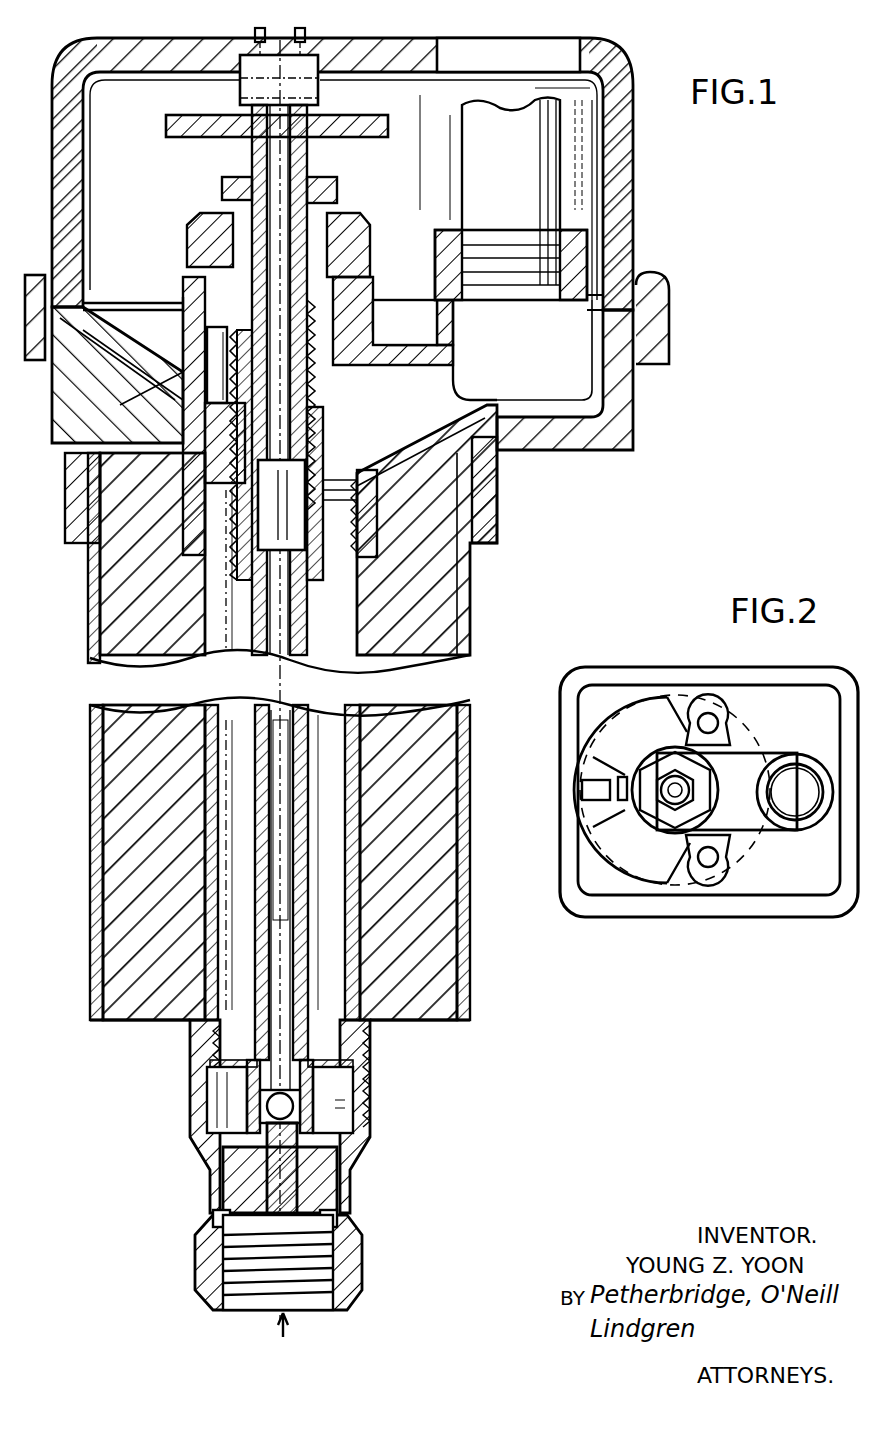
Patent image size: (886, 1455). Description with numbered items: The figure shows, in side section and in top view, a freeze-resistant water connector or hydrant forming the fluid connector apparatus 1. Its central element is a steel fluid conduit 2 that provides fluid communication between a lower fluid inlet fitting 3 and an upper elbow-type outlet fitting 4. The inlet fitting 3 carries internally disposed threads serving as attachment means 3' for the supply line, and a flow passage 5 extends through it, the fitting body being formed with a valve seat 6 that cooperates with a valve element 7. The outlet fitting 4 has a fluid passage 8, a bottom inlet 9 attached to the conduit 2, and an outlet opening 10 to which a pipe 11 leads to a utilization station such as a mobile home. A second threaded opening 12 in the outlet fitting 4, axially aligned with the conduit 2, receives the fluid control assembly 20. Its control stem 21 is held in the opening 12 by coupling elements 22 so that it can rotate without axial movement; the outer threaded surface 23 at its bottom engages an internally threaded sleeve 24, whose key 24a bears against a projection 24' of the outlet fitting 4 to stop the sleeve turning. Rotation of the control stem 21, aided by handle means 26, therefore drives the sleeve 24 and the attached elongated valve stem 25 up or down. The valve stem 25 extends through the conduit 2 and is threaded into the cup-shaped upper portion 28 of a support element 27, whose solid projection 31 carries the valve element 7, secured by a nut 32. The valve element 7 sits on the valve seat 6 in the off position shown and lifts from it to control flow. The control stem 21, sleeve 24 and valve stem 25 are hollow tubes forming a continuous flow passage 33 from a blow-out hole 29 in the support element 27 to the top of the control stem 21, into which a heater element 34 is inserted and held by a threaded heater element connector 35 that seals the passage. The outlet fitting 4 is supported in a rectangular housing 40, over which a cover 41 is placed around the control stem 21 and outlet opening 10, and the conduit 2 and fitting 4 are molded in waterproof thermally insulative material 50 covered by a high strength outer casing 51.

In FIG. 1, the fluid connector apparatus 1 is at (474, 590).
In FIG. 1, the fluid conduit 2 is at (362, 825).
In FIG. 1, the fluid inlet fitting 3 is at (301, 1229).
In FIG. 1, the attachment means 3' is at (305, 1328).
In FIG. 1, the upper fluid outlet fitting 4 is at (552, 420).
In FIG. 1, the flow passage 5 is at (335, 1248).
In FIG. 1, the valve seat 6 is at (222, 1218).
In FIG. 1, the valve element 7 is at (330, 1160).
In FIG. 1, the fluid passage 8 is at (497, 448).
In FIG. 1, the inlet 9 is at (365, 498).
In FIG. 1, the outlet opening 10 is at (560, 252).
In FIG. 1, the pipe 11 is at (560, 162).
In FIG. 2, the pipe 11 is at (790, 832).
In FIG. 1, the second threaded opening 12 is at (183, 285).
In FIG. 1, the fluid control assembly 20 is at (333, 172).
In FIG. 2, the fluid control assembly 20 is at (645, 803).
In FIG. 1, the control stem 21 is at (252, 152).
In FIG. 2, the control stem 21 is at (662, 808).
In FIG. 1, the coupling elements 22 is at (360, 213).
In FIG. 2, the coupling elements 22 is at (715, 770).
In FIG. 1, the outer threaded surface 23 is at (313, 398).
In FIG. 1, the internally threaded sleeve 24 is at (362, 493).
In FIG. 1, the projection 24' is at (139, 404).
In FIG. 1, the key 24a is at (205, 445).
In FIG. 1, the valve stem 25 is at (300, 775).
In FIG. 1, the handle means 26 is at (372, 115).
In FIG. 1, the support element 27 is at (320, 1115).
In FIG. 1, the upper portion 28 is at (207, 1100).
In FIG. 1, the blow-out hole 29 is at (280, 1106).
In FIG. 1, the solid projection 31 is at (297, 1183).
In FIG. 1, the nut 32 is at (223, 1258).
In FIG. 1, the flow passage 33 is at (290, 947).
In FIG. 1, the heater element 34 is at (290, 605).
In FIG. 1, the heater element connector 35 is at (312, 52).
In FIG. 1, the housing 40 is at (68, 400).
In FIG. 2, the housing 40 is at (672, 902).
In FIG. 1, the cover 41 is at (66, 60).
In FIG. 1, the thermally insulative material 50 is at (90, 795).
In FIG. 1, the outer casing 51 is at (88, 626).